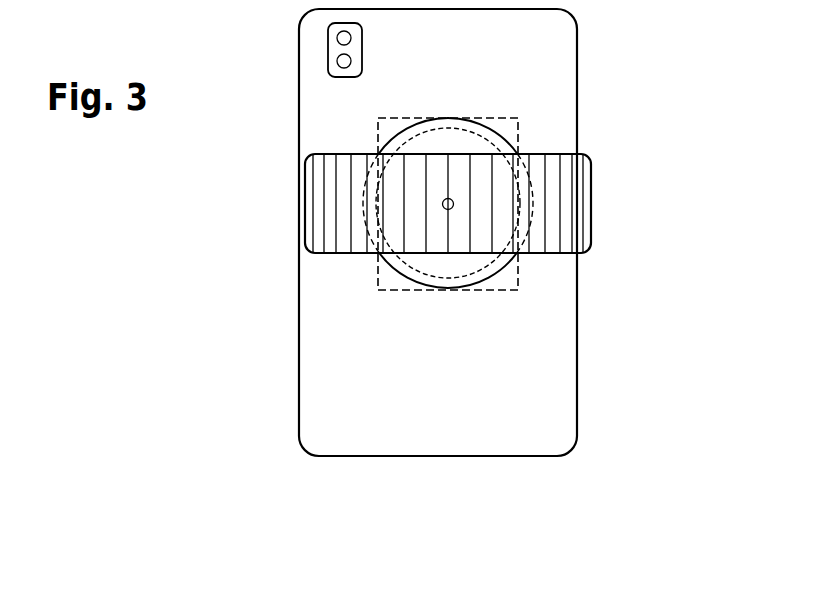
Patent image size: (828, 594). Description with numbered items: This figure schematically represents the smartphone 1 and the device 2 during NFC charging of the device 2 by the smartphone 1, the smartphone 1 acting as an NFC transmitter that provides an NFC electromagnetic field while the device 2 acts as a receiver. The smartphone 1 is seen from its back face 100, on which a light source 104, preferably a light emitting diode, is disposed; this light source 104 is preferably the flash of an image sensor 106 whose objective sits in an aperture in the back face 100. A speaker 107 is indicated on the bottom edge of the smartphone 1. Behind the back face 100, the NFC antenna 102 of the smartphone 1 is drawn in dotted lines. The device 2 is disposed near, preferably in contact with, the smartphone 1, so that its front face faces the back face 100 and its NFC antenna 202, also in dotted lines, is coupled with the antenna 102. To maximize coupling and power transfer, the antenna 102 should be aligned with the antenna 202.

The smartphone 1 is at (603, 27).
The back face 100 is at (558, 53).
The NFC antenna 102 is at (395, 118).
The light source 104 is at (343, 38).
The image sensor 106 is at (343, 60).
The speaker 107 is at (354, 468).
The device 2 is at (623, 236).
The NFC antenna 202 is at (495, 145).